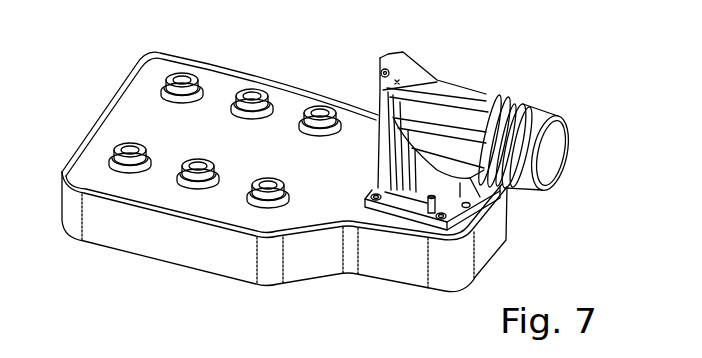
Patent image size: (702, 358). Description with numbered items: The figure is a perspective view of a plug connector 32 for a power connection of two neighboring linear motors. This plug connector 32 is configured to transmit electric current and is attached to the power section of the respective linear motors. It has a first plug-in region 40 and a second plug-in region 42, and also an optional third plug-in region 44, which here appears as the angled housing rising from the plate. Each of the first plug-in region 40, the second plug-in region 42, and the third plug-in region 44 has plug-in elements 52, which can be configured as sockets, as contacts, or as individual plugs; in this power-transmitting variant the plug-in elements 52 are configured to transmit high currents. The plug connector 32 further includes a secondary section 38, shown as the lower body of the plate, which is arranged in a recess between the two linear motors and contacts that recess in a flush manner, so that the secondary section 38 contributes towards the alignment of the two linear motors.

The plug connector 32 is at (140, 112).
The secondary section 38 is at (403, 252).
The first plug-in region 40 is at (218, 88).
The second plug-in region 42 is at (162, 173).
The third plug-in region 44 is at (460, 130).
The plug-in elements 52 is at (320, 116).